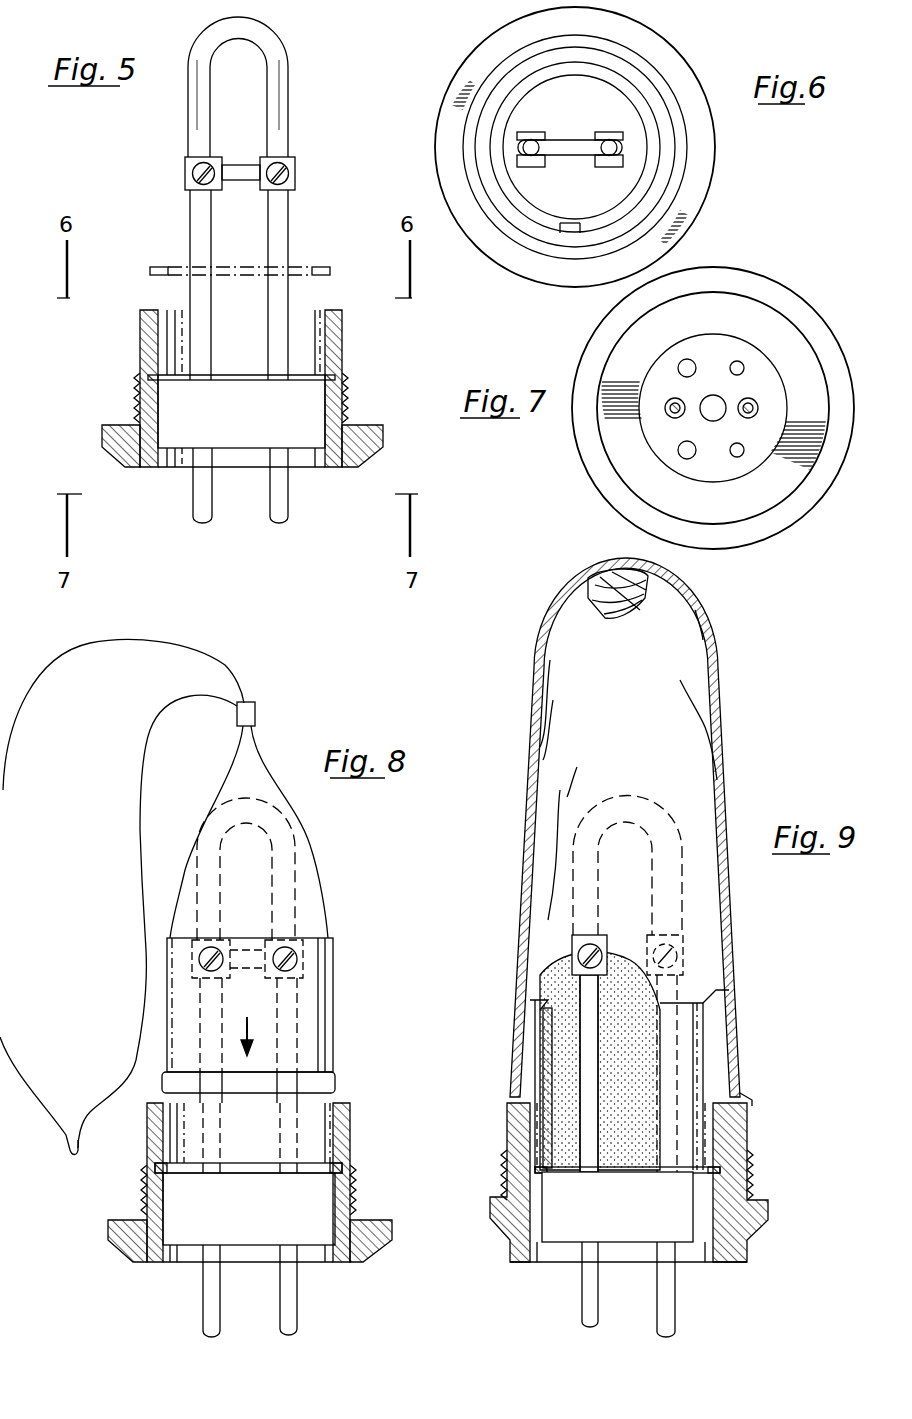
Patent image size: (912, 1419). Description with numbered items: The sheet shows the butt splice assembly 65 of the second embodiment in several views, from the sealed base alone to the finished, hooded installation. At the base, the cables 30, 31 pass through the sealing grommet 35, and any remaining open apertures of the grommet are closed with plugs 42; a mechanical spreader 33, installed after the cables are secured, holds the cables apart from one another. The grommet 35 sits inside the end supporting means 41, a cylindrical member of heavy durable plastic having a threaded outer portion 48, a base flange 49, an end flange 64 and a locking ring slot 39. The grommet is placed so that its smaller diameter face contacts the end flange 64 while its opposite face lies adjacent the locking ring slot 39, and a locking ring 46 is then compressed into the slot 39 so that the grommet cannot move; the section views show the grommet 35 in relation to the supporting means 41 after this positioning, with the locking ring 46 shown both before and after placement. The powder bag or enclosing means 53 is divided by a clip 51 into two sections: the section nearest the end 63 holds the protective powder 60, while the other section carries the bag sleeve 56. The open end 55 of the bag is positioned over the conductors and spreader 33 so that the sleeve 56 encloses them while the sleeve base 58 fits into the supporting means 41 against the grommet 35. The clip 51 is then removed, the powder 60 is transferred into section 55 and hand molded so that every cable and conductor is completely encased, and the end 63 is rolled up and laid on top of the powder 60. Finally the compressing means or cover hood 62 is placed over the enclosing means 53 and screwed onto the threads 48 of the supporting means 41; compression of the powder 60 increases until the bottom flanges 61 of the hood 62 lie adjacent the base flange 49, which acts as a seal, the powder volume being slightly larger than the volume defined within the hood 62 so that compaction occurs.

In FIG. 5, the cable 30 is at (195, 518).
In FIG. 7, the cable 30 is at (666, 410).
In FIG. 8, the cable 30 is at (205, 1330).
In FIG. 9, the cable 30 is at (586, 1324).
In FIG. 5, the cable 31 is at (290, 516).
In FIG. 7, the cable 31 is at (758, 407).
In FIG. 8, the cable 31 is at (299, 1326).
In FIG. 9, the cable 31 is at (677, 1316).
In FIG. 5, the mechanical spreader 33 is at (292, 165).
In FIG. 6, the mechanical spreader 33 is at (600, 134).
In FIG. 8, the mechanical spreader 33 is at (302, 942).
In FIG. 9, the mechanical spreader 33 is at (683, 948).
In FIG. 5, the sealing grommet 35 is at (241, 414).
In FIG. 8, the sealing grommet 35 is at (249, 1209).
In FIG. 9, the sealing grommet 35 is at (567, 1235).
In FIG. 8, the locking ring slot 39 is at (356, 1196).
In FIG. 9, the locking ring slot 39 is at (528, 1186).
In FIG. 5, the end supporting means 41 is at (229, 388).
In FIG. 8, the end supporting means 41 is at (240, 1205).
In FIG. 9, the end supporting means 41 is at (641, 1208).
In FIG. 7, the plugs 42 is at (742, 366).
In FIG. 5, the locking ring 46 is at (330, 267).
In FIG. 6, the locking ring 46 is at (640, 106).
In FIG. 8, the locking ring 46 is at (345, 1164).
In FIG. 9, the locking ring 46 is at (718, 1168).
In FIG. 5, the threaded outer portion 48 is at (140, 390).
In FIG. 8, the threaded outer portion 48 is at (142, 1200).
In FIG. 9, the threaded outer portion 48 is at (750, 1185).
In FIG. 5, the base flange 49 is at (362, 427).
In FIG. 6, the base flange 49 is at (700, 148).
In FIG. 7, the base flange 49 is at (713, 408).
In FIG. 8, the base flange 49 is at (370, 1238).
In FIG. 9, the base flange 49 is at (752, 1228).
In FIG. 8, the clip 51 is at (257, 710).
In FIG. 8, the enclosing means 53 is at (40, 665).
In FIG. 8, the open end 55 is at (248, 790).
In FIG. 8, the bag sleeve 56 is at (312, 1006).
In FIG. 9, the bag sleeve 56 is at (695, 1040).
In FIG. 8, the sleeve base 58 is at (336, 1083).
In FIG. 9, the protective powder 60 is at (682, 622).
In FIG. 9, the bottom flanges 61 is at (770, 1212).
In FIG. 9, the cover hood 62 is at (724, 670).
In FIG. 8, the end 63 is at (68, 1146).
In FIG. 9, the end 63 is at (622, 575).
In FIG. 8, the end flange 64 is at (318, 1262).
In FIG. 9, the end flange 64 is at (700, 1262).
In FIG. 9, the splice assembly 65 is at (728, 722).